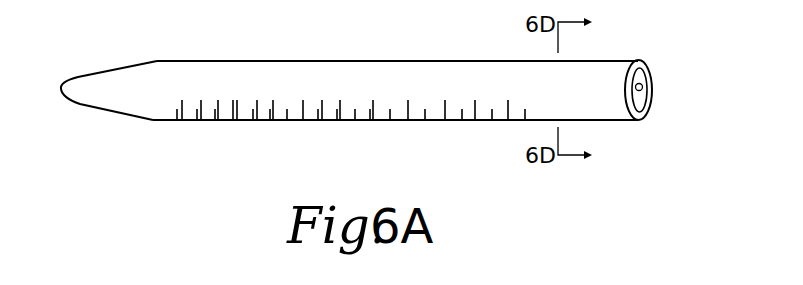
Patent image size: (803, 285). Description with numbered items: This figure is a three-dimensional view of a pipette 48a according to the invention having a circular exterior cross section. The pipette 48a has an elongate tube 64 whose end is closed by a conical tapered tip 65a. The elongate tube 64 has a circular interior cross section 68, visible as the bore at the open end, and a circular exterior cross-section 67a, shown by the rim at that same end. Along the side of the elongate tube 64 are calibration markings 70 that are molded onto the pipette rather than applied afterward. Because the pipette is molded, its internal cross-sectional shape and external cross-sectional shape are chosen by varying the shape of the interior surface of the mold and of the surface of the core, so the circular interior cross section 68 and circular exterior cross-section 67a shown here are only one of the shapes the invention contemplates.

The pipette 48a is at (289, 26).
The elongate tube 64 is at (349, 61).
The conical tapered tip 65a is at (67, 103).
The circular exterior cross-section 67a is at (644, 59).
The circular interior cross section 68 is at (641, 86).
The calibration markings 70 is at (338, 120).